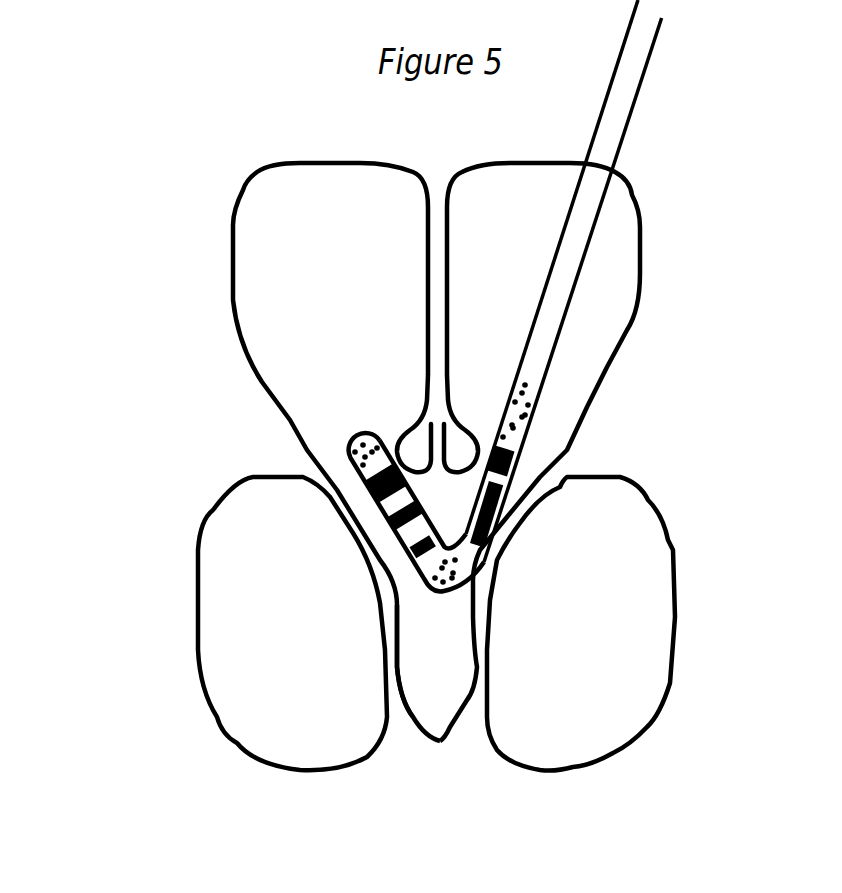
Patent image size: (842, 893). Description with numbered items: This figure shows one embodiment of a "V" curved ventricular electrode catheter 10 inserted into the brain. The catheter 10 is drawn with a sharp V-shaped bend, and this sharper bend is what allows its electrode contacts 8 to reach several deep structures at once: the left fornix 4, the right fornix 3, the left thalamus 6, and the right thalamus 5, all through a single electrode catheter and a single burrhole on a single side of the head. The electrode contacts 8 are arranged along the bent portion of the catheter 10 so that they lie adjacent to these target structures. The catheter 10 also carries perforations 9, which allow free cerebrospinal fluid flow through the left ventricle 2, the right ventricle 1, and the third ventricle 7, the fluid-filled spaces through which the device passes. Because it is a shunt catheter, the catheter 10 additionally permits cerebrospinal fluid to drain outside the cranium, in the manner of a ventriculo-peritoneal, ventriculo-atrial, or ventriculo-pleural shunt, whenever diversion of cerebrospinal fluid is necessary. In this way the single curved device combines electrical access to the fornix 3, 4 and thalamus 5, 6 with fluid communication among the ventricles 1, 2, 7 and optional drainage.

The right ventricle 1 is at (323, 250).
The left ventricle 2 is at (630, 243).
The right fornix 3 is at (410, 445).
The left fornix 4 is at (463, 443).
The right thalamus 5 is at (293, 610).
The left thalamus 6 is at (567, 610).
The third ventricle 7 is at (410, 665).
The electrode contacts 8 is at (412, 540).
The perforations 9 is at (520, 424).
The "V" curved ventricular electrode catheter 10 is at (655, 85).